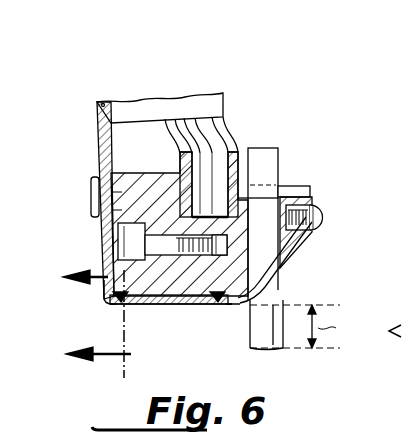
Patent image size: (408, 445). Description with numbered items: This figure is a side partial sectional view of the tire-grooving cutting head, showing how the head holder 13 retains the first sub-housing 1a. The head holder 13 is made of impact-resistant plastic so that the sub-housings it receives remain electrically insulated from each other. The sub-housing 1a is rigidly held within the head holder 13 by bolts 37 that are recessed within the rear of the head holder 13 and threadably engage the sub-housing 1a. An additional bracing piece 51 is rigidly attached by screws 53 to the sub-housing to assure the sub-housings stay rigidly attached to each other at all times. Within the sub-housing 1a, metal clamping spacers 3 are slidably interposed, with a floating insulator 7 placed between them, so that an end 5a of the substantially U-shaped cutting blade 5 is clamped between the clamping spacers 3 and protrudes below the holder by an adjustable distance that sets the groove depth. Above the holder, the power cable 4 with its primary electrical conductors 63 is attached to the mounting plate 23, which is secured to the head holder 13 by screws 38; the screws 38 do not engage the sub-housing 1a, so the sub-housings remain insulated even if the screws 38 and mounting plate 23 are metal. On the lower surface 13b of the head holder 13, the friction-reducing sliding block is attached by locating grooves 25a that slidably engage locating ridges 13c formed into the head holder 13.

The first sub-housing 1a is at (266, 166).
The clamping spacers 3 is at (264, 248).
The power cable 4 is at (155, 110).
The cutting blade 5 is at (282, 283).
The ends of cutting blade 5a is at (272, 166).
The floating insulator 7 is at (90, 321).
The head holder 13 is at (172, 171).
The lower surface of head holder 13b is at (190, 305).
The locating ridges 13c is at (112, 300).
The mounting plate 23 is at (103, 103).
The locating grooves 25a is at (132, 306).
The bolts 37 is at (135, 238).
The screws 38 is at (96, 180).
The bracing piece 51 is at (316, 201).
The screws 53 is at (333, 216).
The primary electrical conductors 63 is at (208, 137).